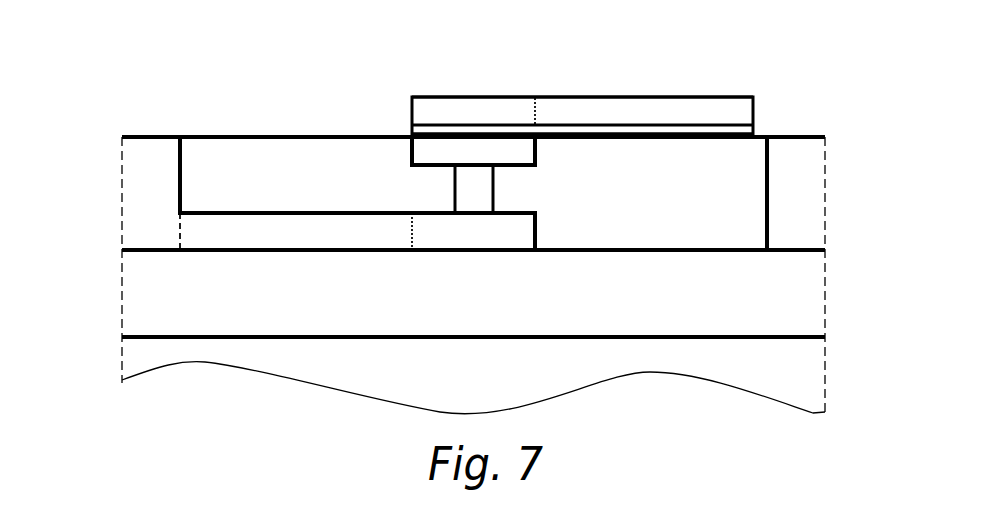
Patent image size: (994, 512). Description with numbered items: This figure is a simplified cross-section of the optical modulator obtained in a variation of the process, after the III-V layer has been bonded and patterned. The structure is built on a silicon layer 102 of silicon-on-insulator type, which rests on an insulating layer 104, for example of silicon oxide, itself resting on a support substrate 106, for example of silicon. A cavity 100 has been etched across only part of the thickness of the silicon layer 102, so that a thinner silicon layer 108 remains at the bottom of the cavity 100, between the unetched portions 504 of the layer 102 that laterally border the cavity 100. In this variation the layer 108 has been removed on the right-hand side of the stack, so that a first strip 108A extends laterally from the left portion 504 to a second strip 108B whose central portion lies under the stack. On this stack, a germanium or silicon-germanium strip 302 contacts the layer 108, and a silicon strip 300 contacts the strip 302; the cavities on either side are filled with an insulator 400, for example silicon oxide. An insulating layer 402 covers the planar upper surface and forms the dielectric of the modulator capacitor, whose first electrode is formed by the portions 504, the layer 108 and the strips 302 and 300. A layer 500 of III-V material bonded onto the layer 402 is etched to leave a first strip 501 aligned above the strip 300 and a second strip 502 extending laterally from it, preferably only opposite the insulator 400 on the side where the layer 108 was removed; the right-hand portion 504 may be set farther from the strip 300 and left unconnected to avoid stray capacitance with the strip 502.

The cavity 100 is at (182, 188).
The silicon layer 102 is at (792, 211).
The insulating layer 104 is at (792, 308).
The support substrate 106 is at (792, 388).
The silicon layer 108 is at (244, 209).
The first strips 108A is at (295, 236).
The second strip 108B is at (472, 237).
The first silicon strip 300 is at (421, 151).
The second germanium or silicon-germanium strip 302 is at (466, 193).
The insulator 400 is at (322, 191).
The insulating layer 402 is at (696, 128).
The layer of III-V material 500 is at (732, 91).
The first strip 501 is at (495, 123).
The second strip 502 is at (665, 123).
The portions of layer 102 504 is at (148, 158).